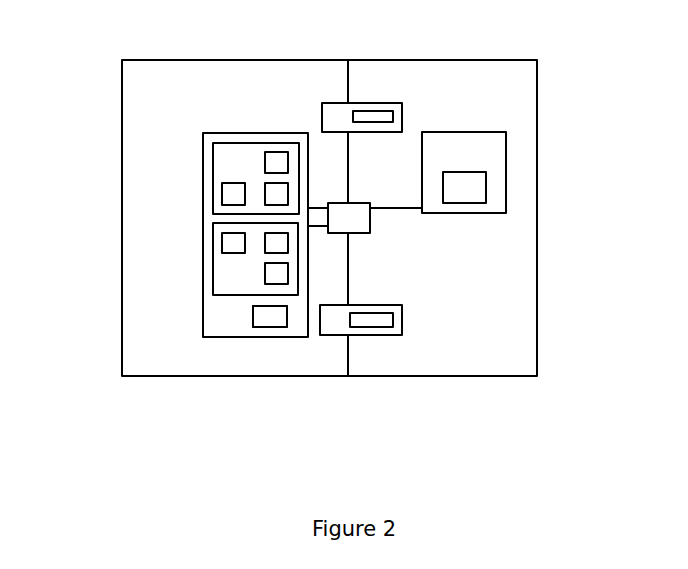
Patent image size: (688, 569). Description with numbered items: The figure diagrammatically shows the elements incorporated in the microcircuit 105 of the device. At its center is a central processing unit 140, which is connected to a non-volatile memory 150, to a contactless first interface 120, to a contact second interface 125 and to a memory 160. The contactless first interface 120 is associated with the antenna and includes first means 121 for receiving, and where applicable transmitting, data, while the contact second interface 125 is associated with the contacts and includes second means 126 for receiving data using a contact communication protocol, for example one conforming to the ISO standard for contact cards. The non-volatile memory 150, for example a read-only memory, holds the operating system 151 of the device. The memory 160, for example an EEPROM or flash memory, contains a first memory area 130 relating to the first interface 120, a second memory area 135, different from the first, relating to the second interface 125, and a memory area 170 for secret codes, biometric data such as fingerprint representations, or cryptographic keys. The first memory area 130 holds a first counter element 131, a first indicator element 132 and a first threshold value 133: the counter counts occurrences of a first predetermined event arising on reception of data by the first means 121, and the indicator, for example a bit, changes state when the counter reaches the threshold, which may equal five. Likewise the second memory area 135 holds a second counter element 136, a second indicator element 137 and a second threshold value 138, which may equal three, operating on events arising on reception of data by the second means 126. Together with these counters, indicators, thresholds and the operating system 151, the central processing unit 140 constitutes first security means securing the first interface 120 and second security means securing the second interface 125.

The microcircuit 105 is at (433, 367).
The contactless first interface 120 is at (332, 112).
The first means for receiving data 121 is at (372, 117).
The contact second interface 125 is at (328, 322).
The second means for receiving data 126 is at (368, 321).
The first memory area 130 is at (233, 163).
The first counter element 131 is at (267, 157).
The first indicator element 132 is at (233, 193).
The first threshold value 133 is at (280, 193).
The second memory area 135 is at (247, 283).
The second counter element 136 is at (277, 275).
The second indicator element 137 is at (223, 243).
The second threshold value 138 is at (277, 243).
The central processing unit 140 is at (360, 223).
The non-volatile memory 150 is at (497, 150).
The operating system 151 is at (475, 192).
The memory 160 is at (223, 306).
The memory area for secret codes 170 is at (265, 315).